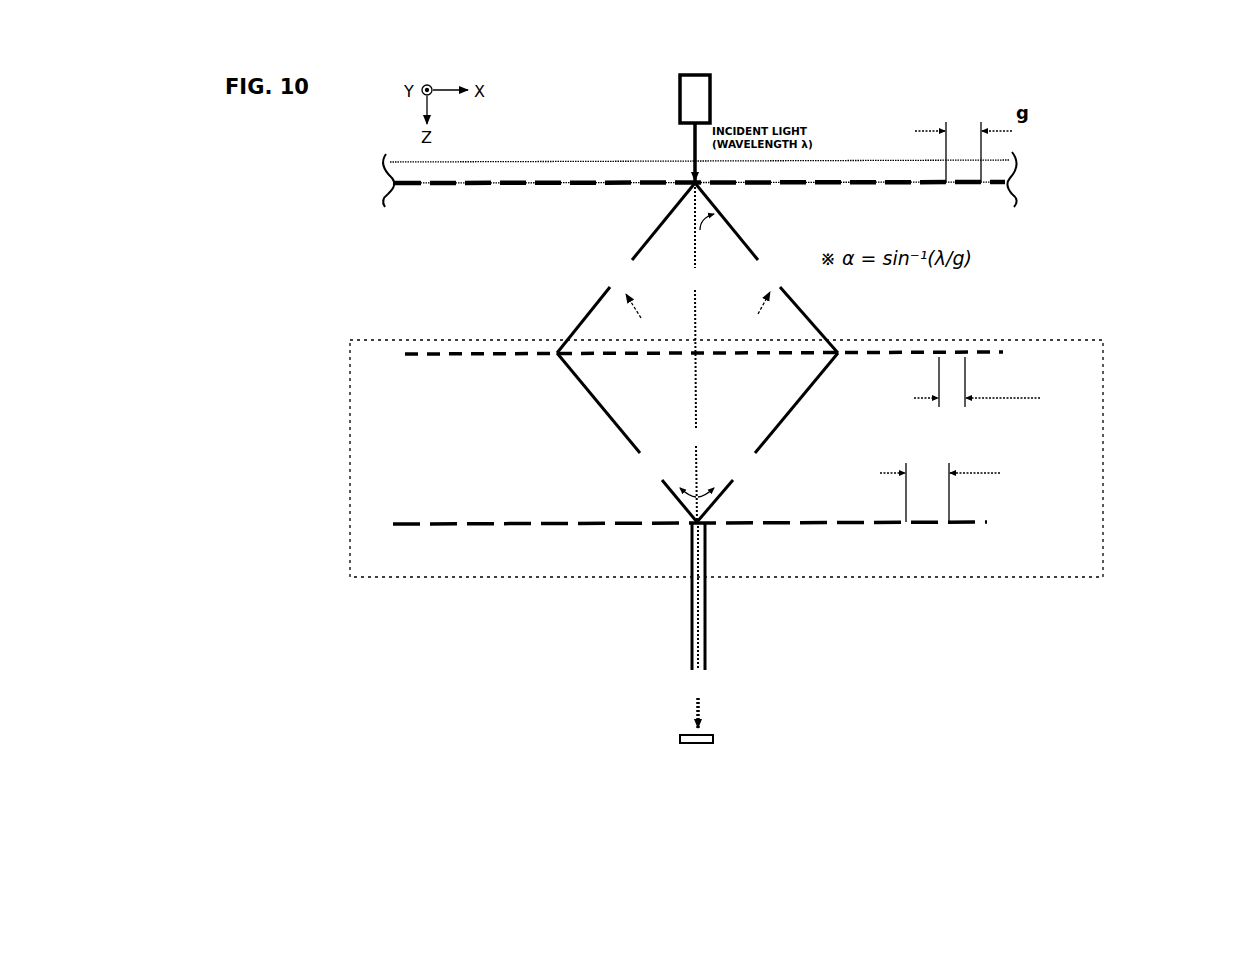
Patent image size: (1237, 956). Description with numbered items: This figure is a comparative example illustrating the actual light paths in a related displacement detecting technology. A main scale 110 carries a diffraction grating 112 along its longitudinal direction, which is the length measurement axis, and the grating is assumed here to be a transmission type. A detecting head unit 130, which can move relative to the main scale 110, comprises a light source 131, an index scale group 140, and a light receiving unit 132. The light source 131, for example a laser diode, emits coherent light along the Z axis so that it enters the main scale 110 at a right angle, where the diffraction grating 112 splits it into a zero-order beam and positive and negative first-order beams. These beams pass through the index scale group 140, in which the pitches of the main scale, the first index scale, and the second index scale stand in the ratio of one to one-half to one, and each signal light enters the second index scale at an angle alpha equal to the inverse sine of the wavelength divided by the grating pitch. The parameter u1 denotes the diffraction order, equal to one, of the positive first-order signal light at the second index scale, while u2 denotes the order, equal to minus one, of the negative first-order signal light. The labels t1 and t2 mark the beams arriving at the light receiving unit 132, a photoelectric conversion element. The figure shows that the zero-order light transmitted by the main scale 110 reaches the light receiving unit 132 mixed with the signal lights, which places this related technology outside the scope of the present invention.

The main scale 110 is at (520, 170).
The diffraction grating 112 is at (562, 190).
The detecting head unit 130 is at (855, 491).
The light source 131 is at (712, 91).
The light receiving unit 132 is at (690, 744).
The index scale group 140 is at (1094, 522).
The order of diffraction u1 is at (786, 597).
The order of diffraction u2 is at (670, 596).
The light beam t1 is at (706, 702).
The light beam t2 is at (722, 698).